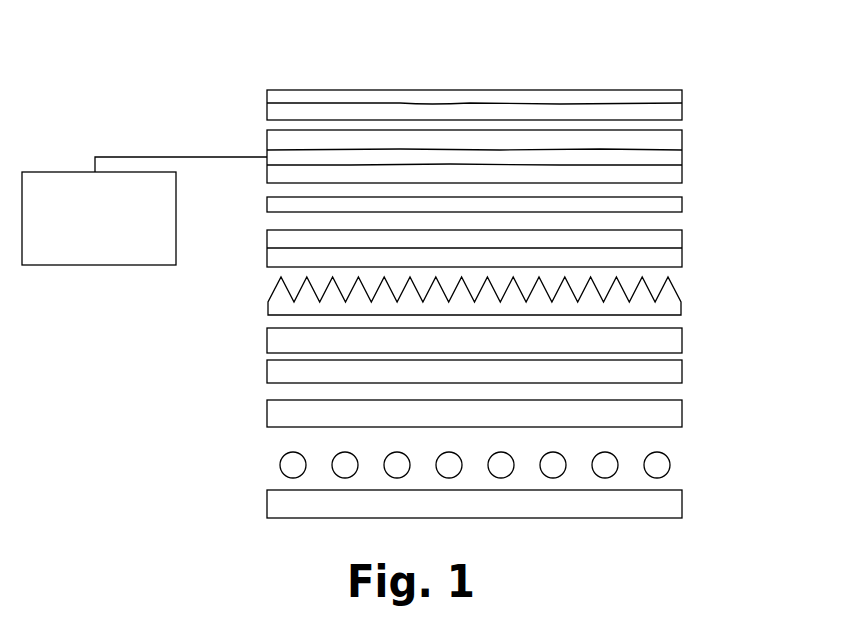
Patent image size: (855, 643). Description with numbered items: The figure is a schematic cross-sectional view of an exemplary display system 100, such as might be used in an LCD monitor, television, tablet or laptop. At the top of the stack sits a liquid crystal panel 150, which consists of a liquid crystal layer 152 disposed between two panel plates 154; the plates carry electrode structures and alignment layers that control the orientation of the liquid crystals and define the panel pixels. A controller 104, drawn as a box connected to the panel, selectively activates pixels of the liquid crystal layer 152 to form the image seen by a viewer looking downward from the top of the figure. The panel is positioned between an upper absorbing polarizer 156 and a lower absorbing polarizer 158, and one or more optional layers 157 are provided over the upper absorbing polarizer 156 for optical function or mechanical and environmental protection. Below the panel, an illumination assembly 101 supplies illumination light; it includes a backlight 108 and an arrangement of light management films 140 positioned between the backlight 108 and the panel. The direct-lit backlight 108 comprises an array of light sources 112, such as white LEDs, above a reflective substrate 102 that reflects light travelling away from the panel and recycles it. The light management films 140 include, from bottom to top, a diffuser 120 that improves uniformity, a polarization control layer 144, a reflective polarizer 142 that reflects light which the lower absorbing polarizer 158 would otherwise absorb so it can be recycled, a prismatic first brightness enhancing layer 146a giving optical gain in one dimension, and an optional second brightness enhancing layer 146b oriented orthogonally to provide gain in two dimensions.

The display system 100 is at (195, 53).
The illumination assembly 101 is at (743, 227).
The reflective substrate 102 is at (267, 504).
The controller 104 is at (97, 265).
The backlight 108 is at (687, 450).
The light sources 112 is at (280, 464).
The diffuser 120 is at (267, 410).
The light management films 140 is at (687, 228).
The reflective polarizer 142 is at (267, 341).
The polarization control layer 144 is at (267, 370).
The first brightness enhancing layer 146a is at (268, 303).
The second brightness enhancing layer 146b is at (267, 252).
The liquid crystal panel 150 is at (690, 132).
The liquid crystal layer 152 is at (267, 155).
The panel plates 154 is at (267, 142).
The upper absorbing polarizer 156 is at (682, 112).
The optional layers 157 is at (682, 98).
The lower absorbing polarizer 158 is at (682, 204).